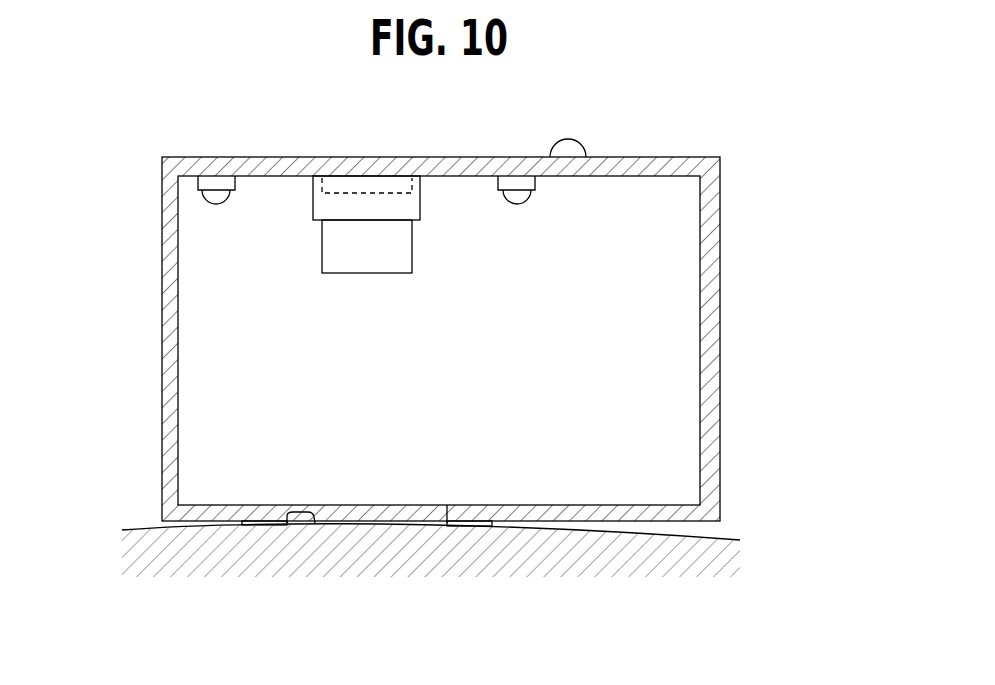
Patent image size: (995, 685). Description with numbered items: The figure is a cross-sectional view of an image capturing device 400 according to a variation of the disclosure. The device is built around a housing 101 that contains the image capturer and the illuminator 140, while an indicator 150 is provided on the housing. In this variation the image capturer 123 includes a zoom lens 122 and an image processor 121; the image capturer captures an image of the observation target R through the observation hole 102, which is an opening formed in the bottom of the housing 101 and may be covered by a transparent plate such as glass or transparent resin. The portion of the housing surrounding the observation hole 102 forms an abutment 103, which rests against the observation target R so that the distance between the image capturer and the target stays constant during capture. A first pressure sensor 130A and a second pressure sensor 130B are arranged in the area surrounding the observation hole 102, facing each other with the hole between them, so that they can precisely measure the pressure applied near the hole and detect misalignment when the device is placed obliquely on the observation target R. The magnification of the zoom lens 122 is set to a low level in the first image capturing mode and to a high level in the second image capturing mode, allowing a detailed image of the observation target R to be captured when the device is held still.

The image capturing device 400 is at (391, 365).
The housing 101 is at (270, 157).
The illuminator 140 is at (197, 193).
The indicator 150 is at (568, 141).
The image capturer 123 is at (313, 200).
The image processor 121 is at (337, 190).
The zoom lens 122 is at (322, 250).
The observation hole 102 is at (313, 522).
The abutment 103 is at (447, 524).
The second pressure sensor 130B is at (242, 524).
The first pressure sensor 130A is at (493, 526).
The observation target R is at (637, 534).